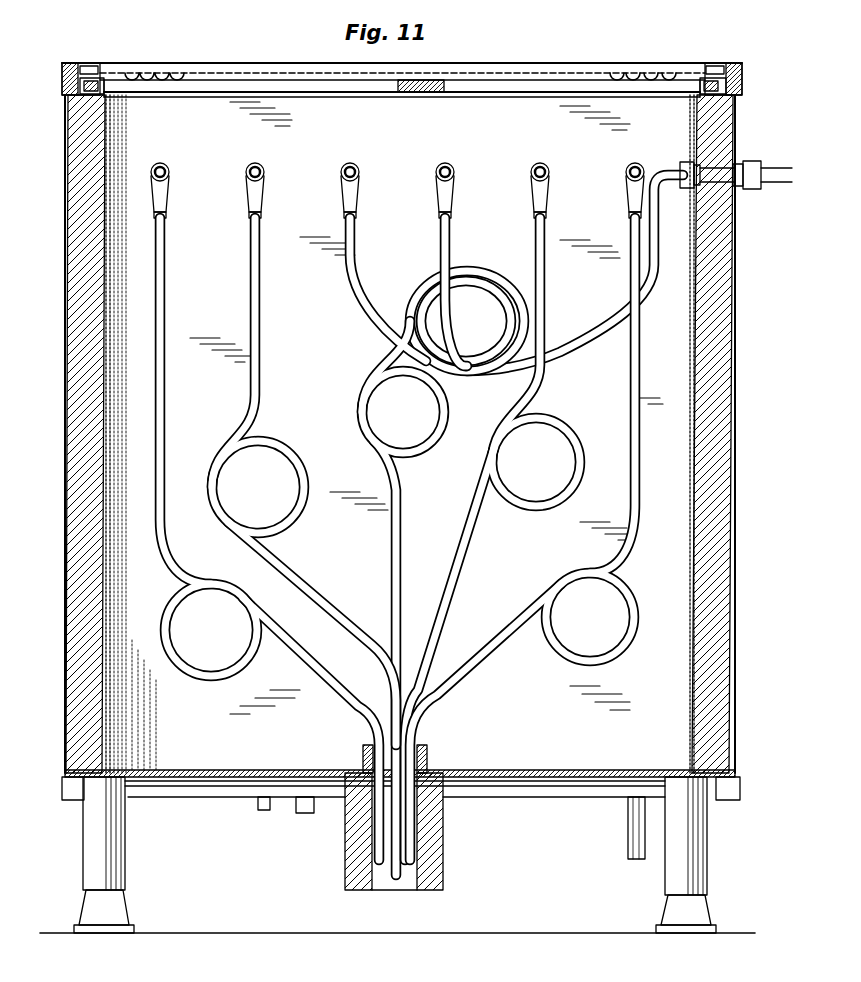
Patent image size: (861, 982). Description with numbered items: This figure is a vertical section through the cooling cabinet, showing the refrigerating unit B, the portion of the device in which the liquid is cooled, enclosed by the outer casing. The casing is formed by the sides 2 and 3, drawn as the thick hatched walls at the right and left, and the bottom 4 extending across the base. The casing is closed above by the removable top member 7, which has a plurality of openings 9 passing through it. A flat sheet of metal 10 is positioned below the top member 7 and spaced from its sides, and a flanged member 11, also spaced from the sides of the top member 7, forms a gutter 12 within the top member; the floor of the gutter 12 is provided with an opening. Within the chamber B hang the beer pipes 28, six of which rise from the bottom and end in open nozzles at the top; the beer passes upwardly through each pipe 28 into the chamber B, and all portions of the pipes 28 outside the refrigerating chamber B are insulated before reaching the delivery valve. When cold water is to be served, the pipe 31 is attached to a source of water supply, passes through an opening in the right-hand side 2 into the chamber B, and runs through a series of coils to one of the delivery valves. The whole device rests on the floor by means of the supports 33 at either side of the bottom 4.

The side 2 is at (733, 512).
The side 3 is at (67, 486).
The bottom 4 is at (240, 800).
The removable top member 7 is at (233, 64).
The openings 9 is at (666, 68).
The flat sheet of metal 10 is at (272, 80).
The flanged member 11 is at (690, 95).
The gutter 12 is at (738, 88).
The beer pipe 28 is at (402, 504).
The pipe 31 is at (356, 288).
The supports 33 is at (712, 837).
The refrigerating unit B is at (404, 138).